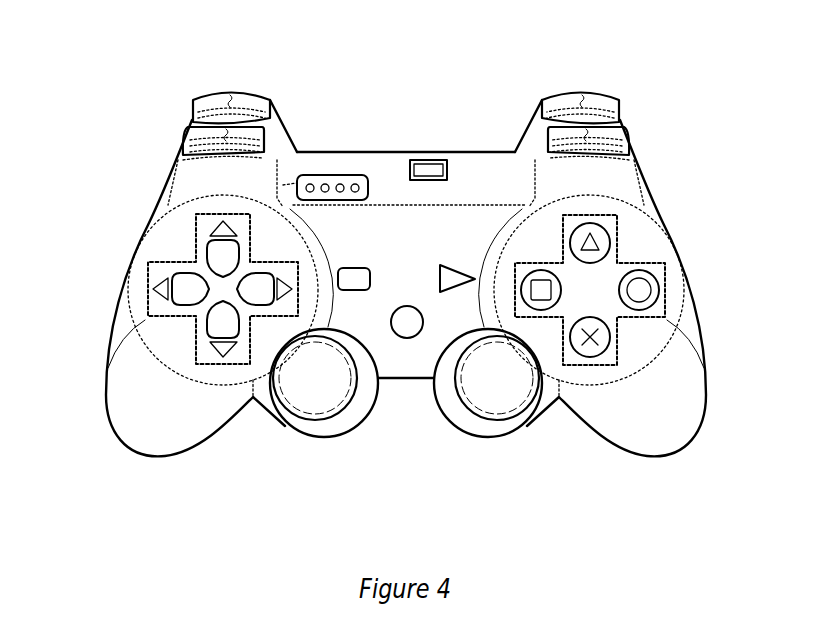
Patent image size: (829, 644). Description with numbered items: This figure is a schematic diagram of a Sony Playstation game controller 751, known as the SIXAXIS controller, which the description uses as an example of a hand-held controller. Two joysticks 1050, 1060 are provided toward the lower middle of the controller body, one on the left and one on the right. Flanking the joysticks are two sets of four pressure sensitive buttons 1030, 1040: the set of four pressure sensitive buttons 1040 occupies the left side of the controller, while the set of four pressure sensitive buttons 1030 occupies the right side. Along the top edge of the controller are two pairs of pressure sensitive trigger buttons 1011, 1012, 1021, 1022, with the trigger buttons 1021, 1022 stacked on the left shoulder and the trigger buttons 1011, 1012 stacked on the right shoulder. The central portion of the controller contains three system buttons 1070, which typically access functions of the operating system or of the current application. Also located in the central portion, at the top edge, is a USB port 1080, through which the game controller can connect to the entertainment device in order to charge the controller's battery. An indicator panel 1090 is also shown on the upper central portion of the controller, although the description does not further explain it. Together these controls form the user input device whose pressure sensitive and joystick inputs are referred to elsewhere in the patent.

The game controller 751 is at (631, 535).
The pressure sensitive trigger button 1022 is at (200, 110).
The pressure sensitive trigger button 1021 is at (190, 138).
The pressure sensitive trigger button 1012 is at (620, 110).
The pressure sensitive trigger button 1011 is at (622, 140).
The LED indicator panel 1090 is at (332, 173).
The USB port 1080 is at (430, 155).
The system buttons 1070 is at (407, 305).
The set of four pressure sensitive buttons 1040 is at (145, 327).
The set of four pressure sensitive buttons 1030 is at (663, 327).
The joystick 1050 is at (313, 420).
The joystick 1060 is at (497, 423).